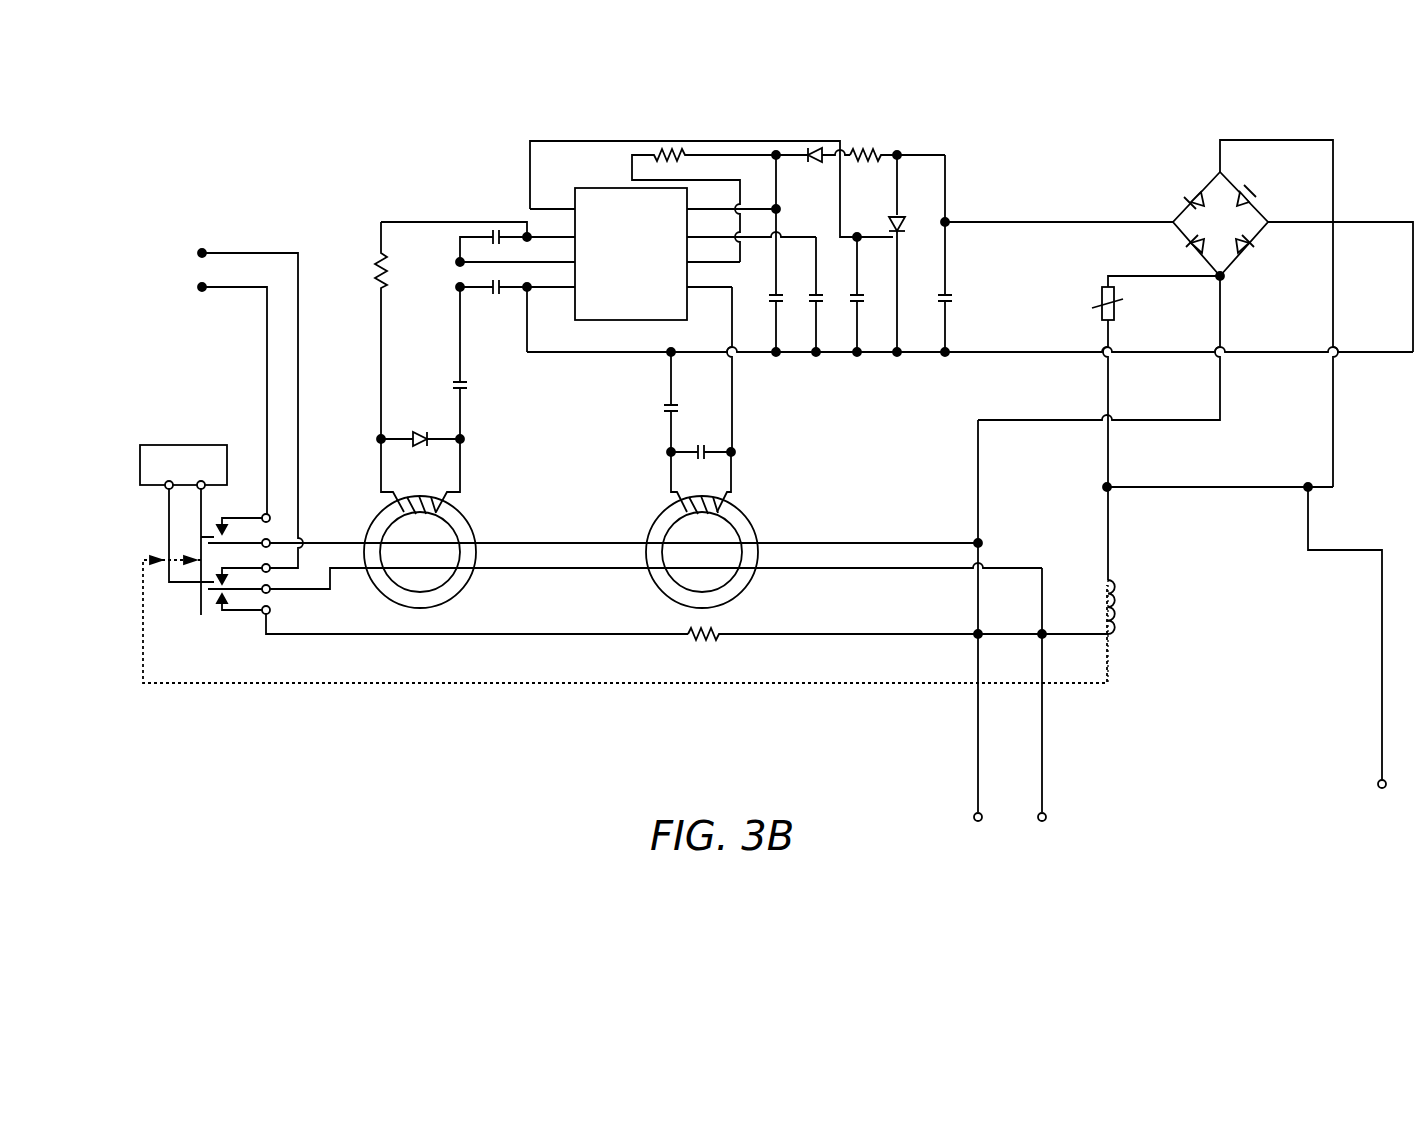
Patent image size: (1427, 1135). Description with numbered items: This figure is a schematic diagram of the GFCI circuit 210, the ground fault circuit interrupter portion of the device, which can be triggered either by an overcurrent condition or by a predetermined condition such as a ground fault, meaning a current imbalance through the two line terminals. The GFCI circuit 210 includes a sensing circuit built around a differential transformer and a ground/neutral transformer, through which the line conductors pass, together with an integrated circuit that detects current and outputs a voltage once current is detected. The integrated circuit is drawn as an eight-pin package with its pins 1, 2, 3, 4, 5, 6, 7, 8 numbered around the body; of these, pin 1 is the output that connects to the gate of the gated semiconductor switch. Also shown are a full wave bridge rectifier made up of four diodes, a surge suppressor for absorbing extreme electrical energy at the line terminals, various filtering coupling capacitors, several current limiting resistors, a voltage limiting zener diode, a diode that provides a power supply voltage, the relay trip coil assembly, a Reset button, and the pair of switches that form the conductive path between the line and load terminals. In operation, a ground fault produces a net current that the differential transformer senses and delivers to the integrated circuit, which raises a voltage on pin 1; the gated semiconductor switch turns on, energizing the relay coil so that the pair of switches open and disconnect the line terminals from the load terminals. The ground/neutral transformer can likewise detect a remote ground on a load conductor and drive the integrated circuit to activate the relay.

The GFCI circuit 210 is at (280, 718).
The pin 1 of integrated circuit IC- 1 is at (560, 209).
The IC pin 2 is at (558, 237).
The IC pin 3 is at (525, 262).
The IC pin 4 is at (558, 287).
The IC pin 5 is at (699, 287).
The IC pin 6 is at (703, 262).
The IC pin 7 is at (741, 237).
The IC pin 8 is at (721, 209).